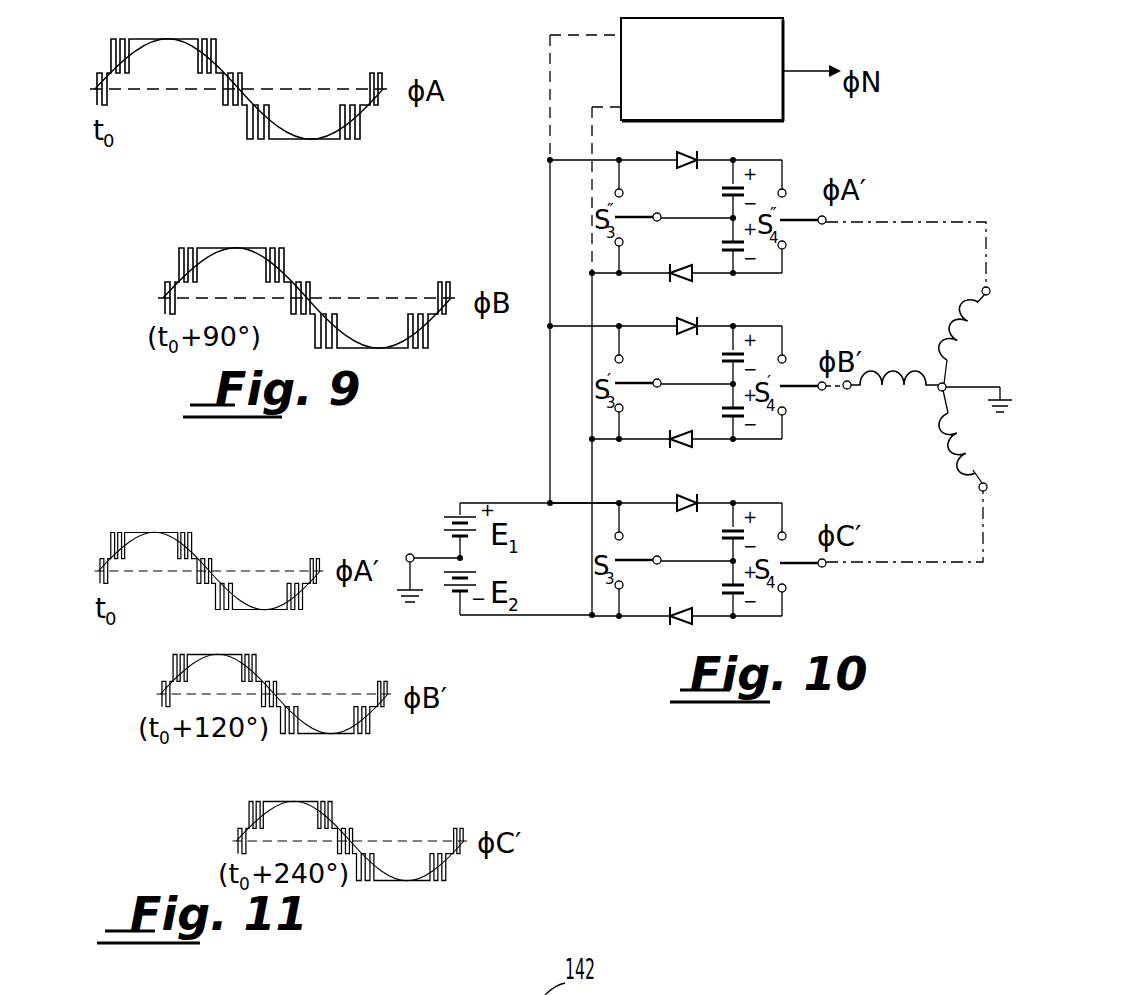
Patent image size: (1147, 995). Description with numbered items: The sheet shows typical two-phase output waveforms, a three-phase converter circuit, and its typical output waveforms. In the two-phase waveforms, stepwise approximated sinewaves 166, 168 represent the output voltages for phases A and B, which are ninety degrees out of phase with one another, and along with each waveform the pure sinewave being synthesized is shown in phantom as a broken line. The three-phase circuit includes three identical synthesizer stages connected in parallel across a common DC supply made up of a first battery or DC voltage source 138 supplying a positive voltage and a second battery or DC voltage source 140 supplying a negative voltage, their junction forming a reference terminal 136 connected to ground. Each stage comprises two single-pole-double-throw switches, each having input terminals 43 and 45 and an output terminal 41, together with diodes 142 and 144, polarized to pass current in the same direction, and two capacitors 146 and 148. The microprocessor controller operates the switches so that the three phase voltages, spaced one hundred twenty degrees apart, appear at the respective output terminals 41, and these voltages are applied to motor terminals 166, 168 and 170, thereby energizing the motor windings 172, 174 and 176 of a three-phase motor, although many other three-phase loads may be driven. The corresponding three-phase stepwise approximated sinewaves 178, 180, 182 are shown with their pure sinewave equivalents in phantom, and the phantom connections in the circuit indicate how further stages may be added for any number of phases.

In FIG. 9, the stepwise approximated sinewave / motor terminal 166 is at (223, 50).
In FIG. 10, the stepwise approximated sinewave / motor terminal 166 is at (983, 288).
In FIG. 9, the stepwise approximated sinewave / motor terminal 168 is at (287, 260).
In FIG. 10, the stepwise approximated sinewave / motor terminal 168 is at (849, 390).
In FIG. 11, the three-phase waveform 178 is at (223, 560).
In FIG. 11, the three-phase waveform 180 is at (268, 667).
In FIG. 11, the three-phase waveform 182 is at (348, 812).
In FIG. 10, the reference terminal 136 is at (408, 555).
In FIG. 10, the first battery or DC voltage source 138 is at (444, 531).
In FIG. 10, the second battery or DC voltage source 140 is at (447, 586).
In FIG. 10, the diode 142 is at (710, 489).
In FIG. 10, the diode 144 is at (654, 634).
In FIG. 10, the capacitor 146 is at (716, 548).
In FIG. 10, the capacitor 148 is at (711, 579).
In FIG. 10, the input terminal 45 is at (713, 515).
In FIG. 10, the output terminal 41 is at (733, 564).
In FIG. 10, the input terminal 43 is at (716, 603).
In FIG. 10, the motor terminal 170 is at (980, 491).
In FIG. 10, the motor winding 172 is at (957, 318).
In FIG. 10, the motor winding 174 is at (900, 370).
In FIG. 10, the motor winding 176 is at (960, 461).